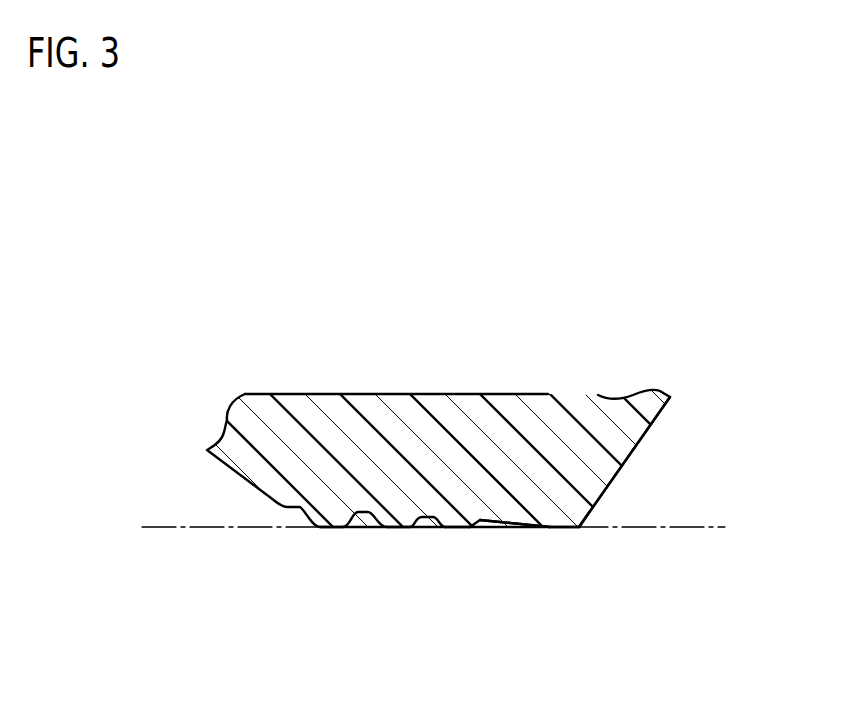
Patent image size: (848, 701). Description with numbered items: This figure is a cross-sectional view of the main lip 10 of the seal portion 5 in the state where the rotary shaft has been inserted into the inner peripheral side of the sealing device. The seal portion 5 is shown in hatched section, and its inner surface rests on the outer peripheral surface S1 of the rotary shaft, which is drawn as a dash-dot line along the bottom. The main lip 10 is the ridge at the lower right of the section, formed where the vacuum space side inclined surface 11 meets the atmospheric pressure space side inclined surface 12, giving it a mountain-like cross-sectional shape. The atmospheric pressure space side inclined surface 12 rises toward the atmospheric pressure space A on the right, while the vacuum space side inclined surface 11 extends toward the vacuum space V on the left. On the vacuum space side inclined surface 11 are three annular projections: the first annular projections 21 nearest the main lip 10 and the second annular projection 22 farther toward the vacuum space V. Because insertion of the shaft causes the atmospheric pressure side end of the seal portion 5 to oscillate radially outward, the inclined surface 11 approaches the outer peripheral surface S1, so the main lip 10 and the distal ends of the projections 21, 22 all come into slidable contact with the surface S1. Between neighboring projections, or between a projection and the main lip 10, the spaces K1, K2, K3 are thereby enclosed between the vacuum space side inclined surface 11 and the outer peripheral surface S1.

The seal portion 5 is at (563, 432).
The main lip 10 is at (578, 527).
The vacuum space side inclined surface 11 is at (518, 526).
The atmospheric pressure space side inclined surface 12 is at (616, 474).
The first annular projections 21 is at (395, 527).
The second annular projection 22 is at (317, 527).
The space K1 is at (492, 527).
The space K2 is at (423, 527).
The space K3 is at (368, 527).
The atmospheric pressure space A is at (690, 448).
The vacuum space V is at (192, 487).
The outer peripheral surface S1 is at (170, 527).